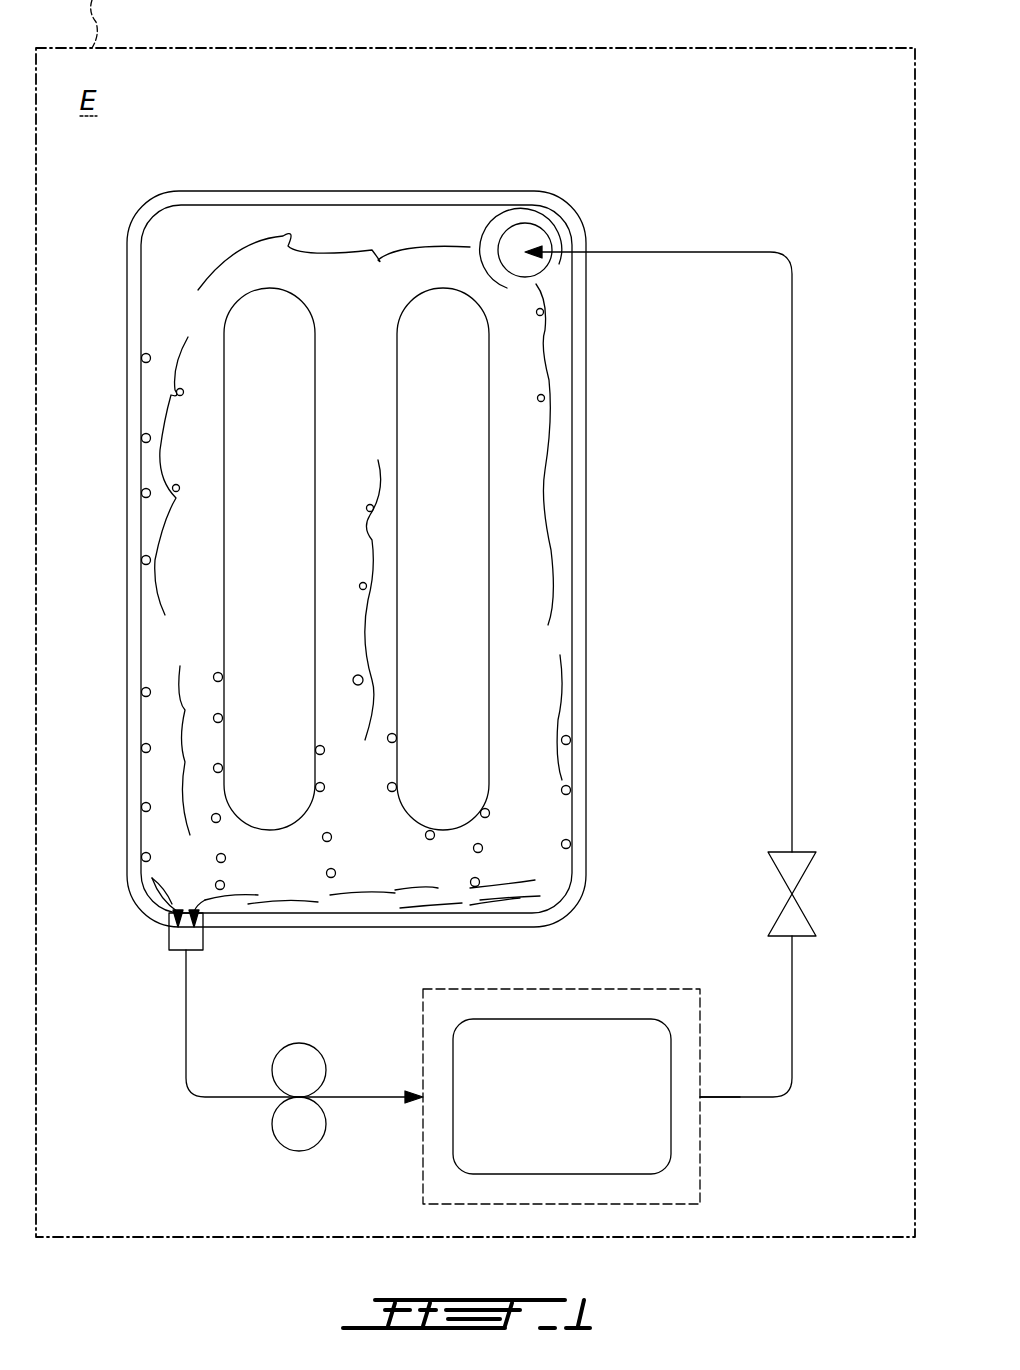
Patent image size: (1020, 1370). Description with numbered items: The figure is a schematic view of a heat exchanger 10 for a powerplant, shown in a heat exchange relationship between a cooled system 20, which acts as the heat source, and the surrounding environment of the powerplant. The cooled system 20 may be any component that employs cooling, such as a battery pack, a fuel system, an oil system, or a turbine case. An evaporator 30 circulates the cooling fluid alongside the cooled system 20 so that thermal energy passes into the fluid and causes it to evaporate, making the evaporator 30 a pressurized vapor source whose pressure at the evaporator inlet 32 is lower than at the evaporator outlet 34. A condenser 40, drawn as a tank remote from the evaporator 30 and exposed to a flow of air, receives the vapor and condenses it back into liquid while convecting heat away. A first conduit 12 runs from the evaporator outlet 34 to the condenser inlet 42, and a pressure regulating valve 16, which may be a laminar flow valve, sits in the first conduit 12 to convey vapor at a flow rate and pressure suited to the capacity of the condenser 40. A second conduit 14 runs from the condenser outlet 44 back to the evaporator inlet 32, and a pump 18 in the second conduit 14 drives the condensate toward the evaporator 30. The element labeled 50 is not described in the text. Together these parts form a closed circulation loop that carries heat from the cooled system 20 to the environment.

The heat exchanger 10 is at (766, 182).
The first conduit 12 is at (793, 520).
The second conduit 14 is at (186, 1050).
The pressure regulating valve 16 is at (828, 864).
The pump 18 is at (291, 1170).
The cooled system 20 is at (671, 1130).
The evaporator 30 is at (640, 989).
The evaporator inlet 32 is at (418, 1090).
The evaporator outlet 34 is at (701, 1092).
The condenser 40 is at (342, 163).
The condenser inlet 42 is at (551, 236).
The condenser outlet 44 is at (169, 940).
The inner wall 50 is at (586, 492).